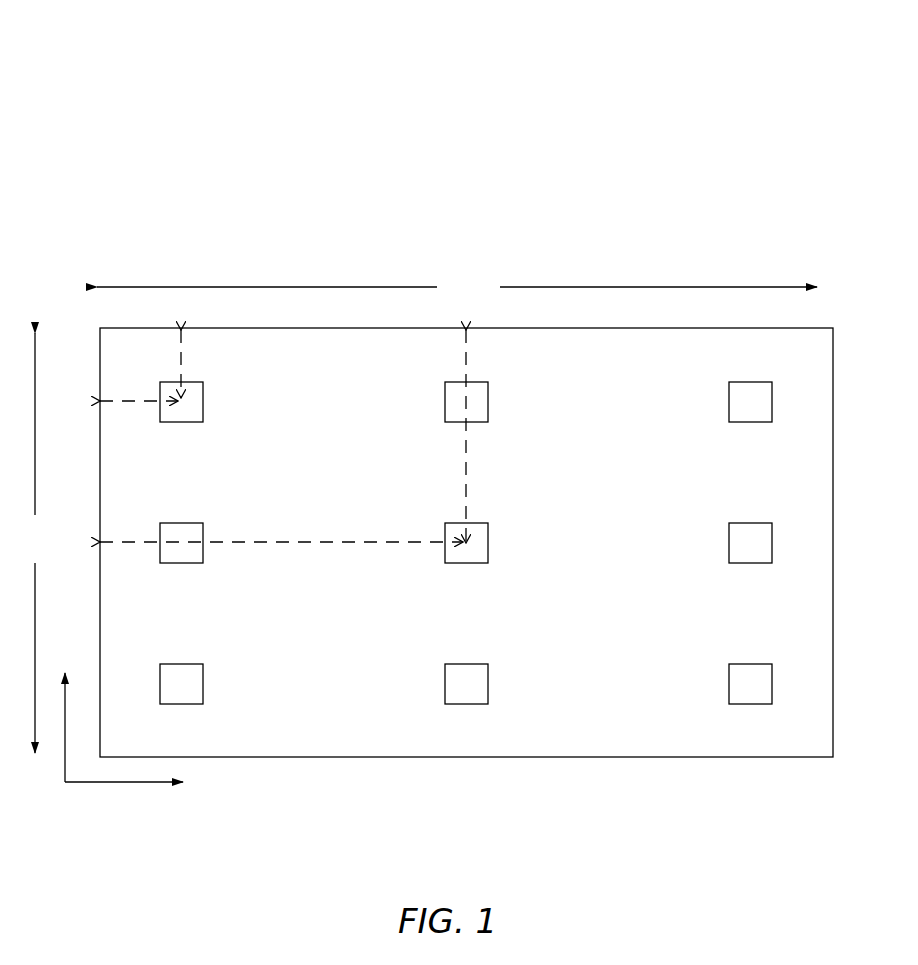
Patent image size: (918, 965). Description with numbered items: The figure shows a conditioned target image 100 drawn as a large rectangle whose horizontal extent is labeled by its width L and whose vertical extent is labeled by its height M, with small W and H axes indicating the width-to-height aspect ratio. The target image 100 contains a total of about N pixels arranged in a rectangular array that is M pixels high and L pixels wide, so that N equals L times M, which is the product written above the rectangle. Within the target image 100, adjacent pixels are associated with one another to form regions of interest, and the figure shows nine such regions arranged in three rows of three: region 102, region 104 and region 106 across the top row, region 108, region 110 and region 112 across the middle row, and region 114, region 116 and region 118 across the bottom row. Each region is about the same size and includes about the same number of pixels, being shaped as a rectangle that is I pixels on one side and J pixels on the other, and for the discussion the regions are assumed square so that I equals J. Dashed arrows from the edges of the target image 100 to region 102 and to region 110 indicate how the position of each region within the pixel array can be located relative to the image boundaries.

The target image 100 is at (112, 120).
The region R102 102 is at (203, 397).
The region R104 104 is at (488, 398).
The region R106 106 is at (729, 403).
The region R108 108 is at (203, 558).
The region R110 110 is at (488, 553).
The region R112 112 is at (729, 560).
The region R114 114 is at (203, 695).
The region R116 116 is at (488, 696).
The region R118 118 is at (729, 702).